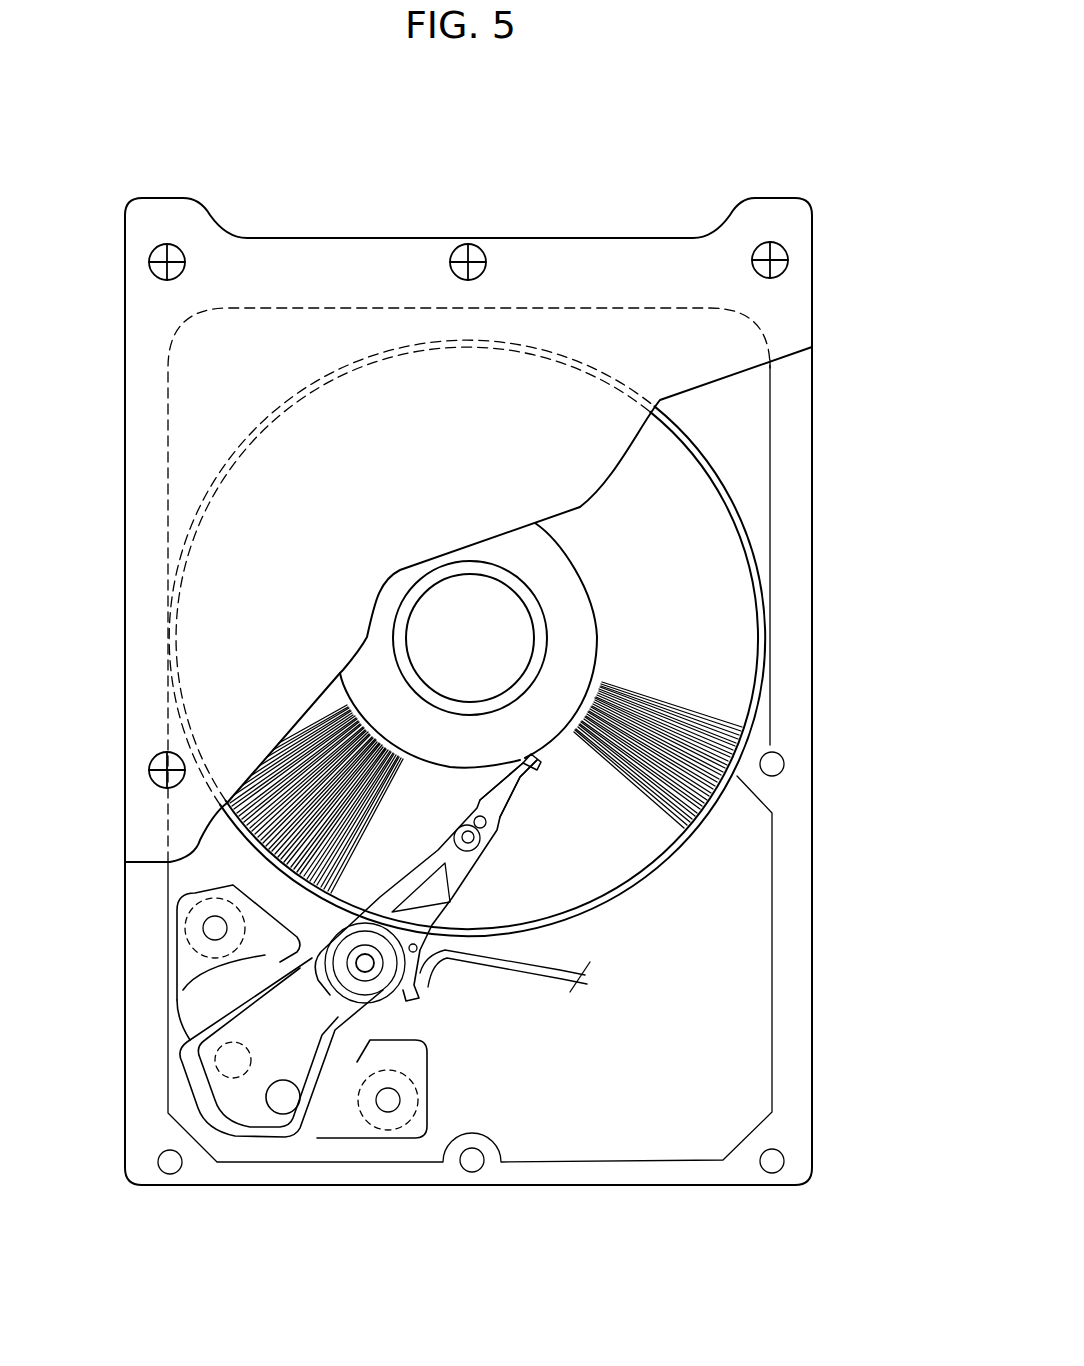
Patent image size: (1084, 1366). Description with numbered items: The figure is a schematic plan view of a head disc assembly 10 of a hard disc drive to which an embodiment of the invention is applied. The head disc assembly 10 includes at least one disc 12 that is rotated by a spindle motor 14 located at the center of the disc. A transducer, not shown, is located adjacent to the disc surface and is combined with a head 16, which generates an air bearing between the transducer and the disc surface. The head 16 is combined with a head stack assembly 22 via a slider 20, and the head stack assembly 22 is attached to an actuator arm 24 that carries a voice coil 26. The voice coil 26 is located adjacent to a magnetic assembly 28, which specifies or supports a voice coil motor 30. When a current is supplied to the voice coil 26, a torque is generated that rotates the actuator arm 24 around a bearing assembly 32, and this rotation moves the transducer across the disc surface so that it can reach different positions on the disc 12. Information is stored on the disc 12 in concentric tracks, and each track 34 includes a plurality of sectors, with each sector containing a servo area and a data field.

The head disc assembly 10 is at (603, 156).
The disc 12 is at (725, 572).
The spindle motor 14 is at (445, 612).
The head 16 is at (530, 767).
The slider 20 is at (517, 783).
The head stack assembly 22 is at (470, 880).
The actuator arm 24 is at (277, 982).
The voice coil 26 is at (203, 1050).
The magnetic assembly 28 is at (217, 998).
The voice coil motor 30 is at (337, 1117).
The bearing assembly 32 is at (380, 980).
The track 34 is at (297, 787).